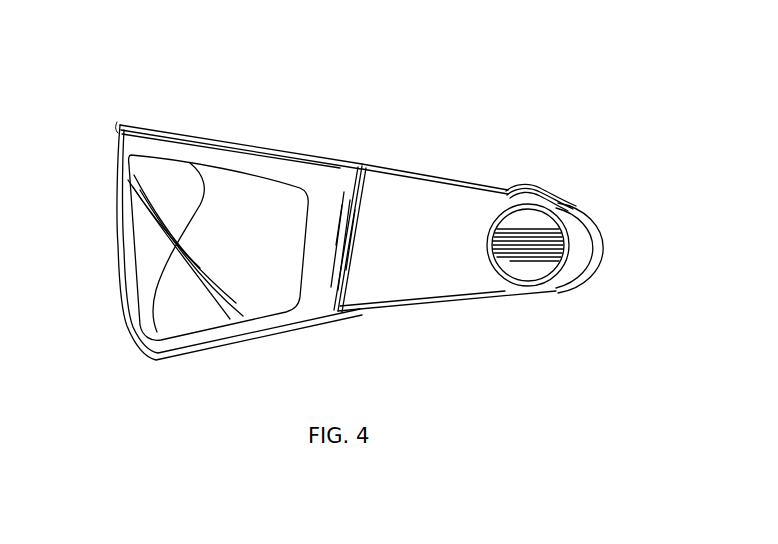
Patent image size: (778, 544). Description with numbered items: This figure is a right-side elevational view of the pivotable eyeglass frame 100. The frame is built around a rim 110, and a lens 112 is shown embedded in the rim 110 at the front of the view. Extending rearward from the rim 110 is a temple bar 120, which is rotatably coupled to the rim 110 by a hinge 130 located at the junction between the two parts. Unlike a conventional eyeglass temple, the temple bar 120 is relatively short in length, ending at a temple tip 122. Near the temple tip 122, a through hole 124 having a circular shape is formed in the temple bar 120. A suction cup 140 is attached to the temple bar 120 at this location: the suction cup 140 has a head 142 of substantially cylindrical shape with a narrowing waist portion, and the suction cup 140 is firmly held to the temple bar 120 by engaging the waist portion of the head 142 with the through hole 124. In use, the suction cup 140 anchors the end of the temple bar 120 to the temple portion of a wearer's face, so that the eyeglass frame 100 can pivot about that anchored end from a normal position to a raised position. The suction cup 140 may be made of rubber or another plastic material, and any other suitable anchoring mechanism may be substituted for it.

The pivotable eyeglass frame 100 is at (204, 108).
The rim 110 is at (128, 137).
The lens 112 is at (184, 322).
The temple bar 120 is at (427, 208).
The temple tip 122 is at (580, 262).
The through hole 124 is at (502, 284).
The hinge 130 is at (366, 150).
The suction cup 140 is at (541, 190).
The head 142 is at (545, 221).